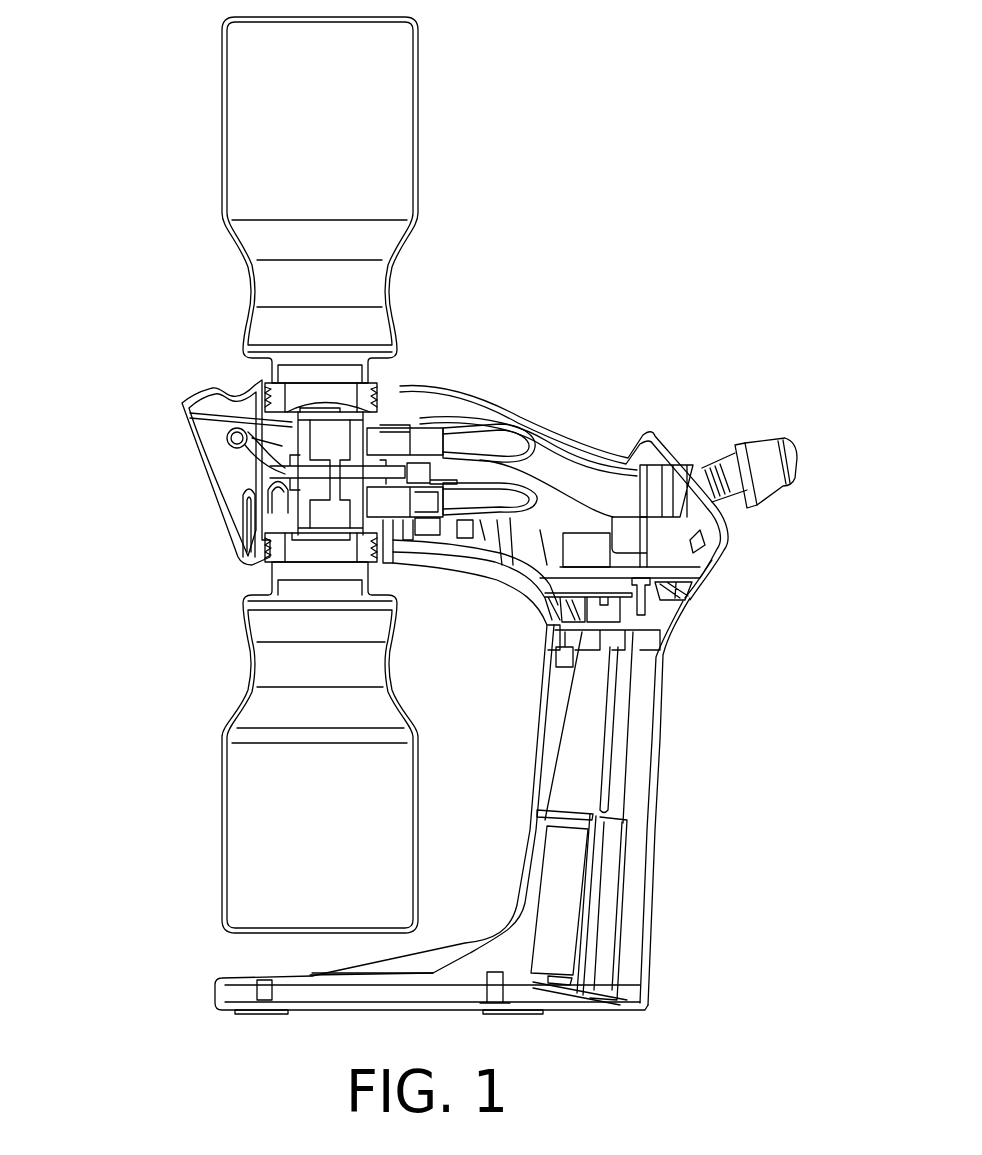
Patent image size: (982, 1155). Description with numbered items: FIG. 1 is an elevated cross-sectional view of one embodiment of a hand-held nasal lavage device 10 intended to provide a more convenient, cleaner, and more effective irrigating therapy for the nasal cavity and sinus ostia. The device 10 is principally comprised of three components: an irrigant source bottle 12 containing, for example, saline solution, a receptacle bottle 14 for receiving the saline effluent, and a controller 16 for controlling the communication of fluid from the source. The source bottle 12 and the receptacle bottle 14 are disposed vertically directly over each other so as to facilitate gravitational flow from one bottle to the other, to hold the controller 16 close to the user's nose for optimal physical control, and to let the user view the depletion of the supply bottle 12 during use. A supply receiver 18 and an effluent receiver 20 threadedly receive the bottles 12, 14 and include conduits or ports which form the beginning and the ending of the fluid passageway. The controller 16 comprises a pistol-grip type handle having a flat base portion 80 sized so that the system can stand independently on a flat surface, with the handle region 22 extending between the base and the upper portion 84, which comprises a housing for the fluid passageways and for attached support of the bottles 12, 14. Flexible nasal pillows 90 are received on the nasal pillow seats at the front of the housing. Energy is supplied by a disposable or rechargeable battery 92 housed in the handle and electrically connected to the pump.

The device 10 is at (152, 526).
The irrigant source bottle 12 is at (398, 105).
The receptacle bottle 14 is at (240, 843).
The controller 16 is at (694, 606).
The supply receiver 18 is at (393, 380).
The effluent receiver 20 is at (397, 547).
The handle grip 22 is at (675, 802).
The flat base portion 80 is at (590, 1020).
The upper portion 84 is at (563, 388).
The flexible nasal pillows 90 is at (772, 437).
The battery 92 is at (567, 895).